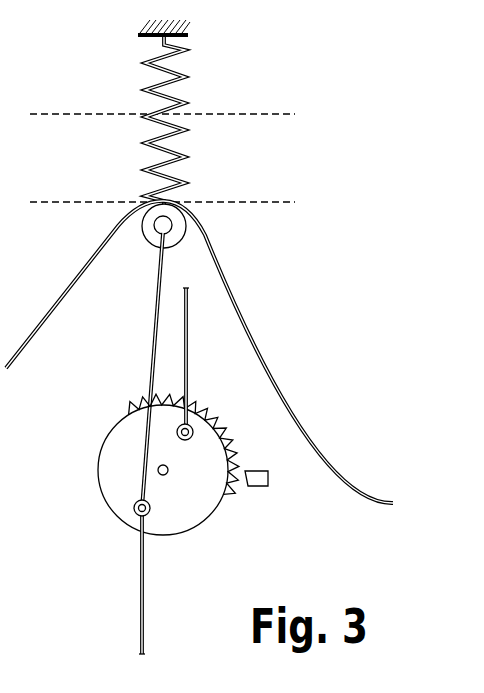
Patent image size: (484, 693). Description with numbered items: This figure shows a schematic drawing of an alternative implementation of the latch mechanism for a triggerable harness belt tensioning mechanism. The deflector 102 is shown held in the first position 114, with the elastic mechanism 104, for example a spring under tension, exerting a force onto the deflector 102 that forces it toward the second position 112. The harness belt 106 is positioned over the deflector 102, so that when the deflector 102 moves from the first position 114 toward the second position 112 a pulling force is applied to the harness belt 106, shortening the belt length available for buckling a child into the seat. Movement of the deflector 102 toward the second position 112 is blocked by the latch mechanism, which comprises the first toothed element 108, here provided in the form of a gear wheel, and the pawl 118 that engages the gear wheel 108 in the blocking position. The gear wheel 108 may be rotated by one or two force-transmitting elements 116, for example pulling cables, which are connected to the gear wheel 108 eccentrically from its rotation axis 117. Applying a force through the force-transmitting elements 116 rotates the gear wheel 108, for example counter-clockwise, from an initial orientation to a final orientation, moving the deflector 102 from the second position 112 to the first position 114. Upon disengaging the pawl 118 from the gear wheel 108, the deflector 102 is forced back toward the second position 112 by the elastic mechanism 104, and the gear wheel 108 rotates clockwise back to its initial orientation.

The deflector 102 is at (142, 229).
The elastic mechanism 104 is at (160, 83).
The harness belt 106 is at (290, 402).
The first toothed element 108 is at (227, 432).
The second position 112 is at (288, 114).
The first position 114 is at (288, 202).
The force-transmitting element 116 is at (188, 316).
The rotation axis 117 is at (166, 476).
The pawl 118 is at (270, 478).